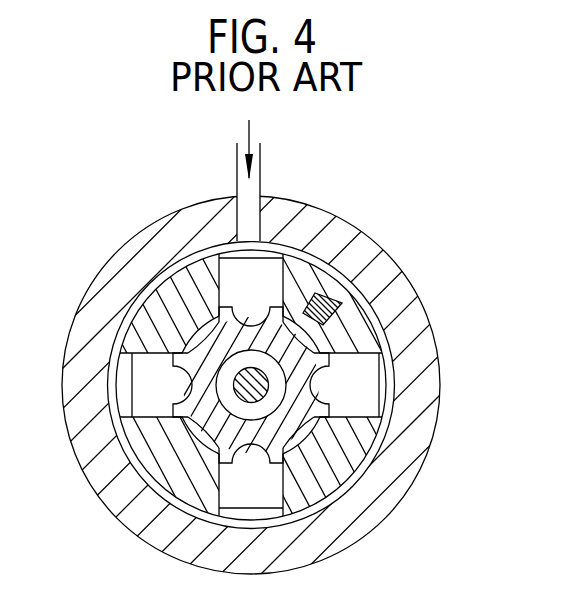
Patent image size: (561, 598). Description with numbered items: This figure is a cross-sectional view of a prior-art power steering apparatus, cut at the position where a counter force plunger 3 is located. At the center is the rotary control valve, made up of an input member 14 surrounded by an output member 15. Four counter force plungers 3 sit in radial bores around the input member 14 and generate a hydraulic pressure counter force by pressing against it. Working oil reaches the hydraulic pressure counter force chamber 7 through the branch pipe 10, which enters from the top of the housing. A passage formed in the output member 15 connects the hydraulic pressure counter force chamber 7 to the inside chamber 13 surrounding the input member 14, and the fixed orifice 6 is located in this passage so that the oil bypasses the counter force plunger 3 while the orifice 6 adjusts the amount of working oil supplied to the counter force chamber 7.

The counter force plunger 3 is at (262, 272).
The fixed orifice 6 is at (322, 287).
The hydraulic pressure counter force chamber 7 is at (227, 243).
The branch pipe 10 is at (250, 200).
The inside chamber 13 is at (293, 328).
The input member 14 is at (203, 315).
The output member 15 is at (158, 312).